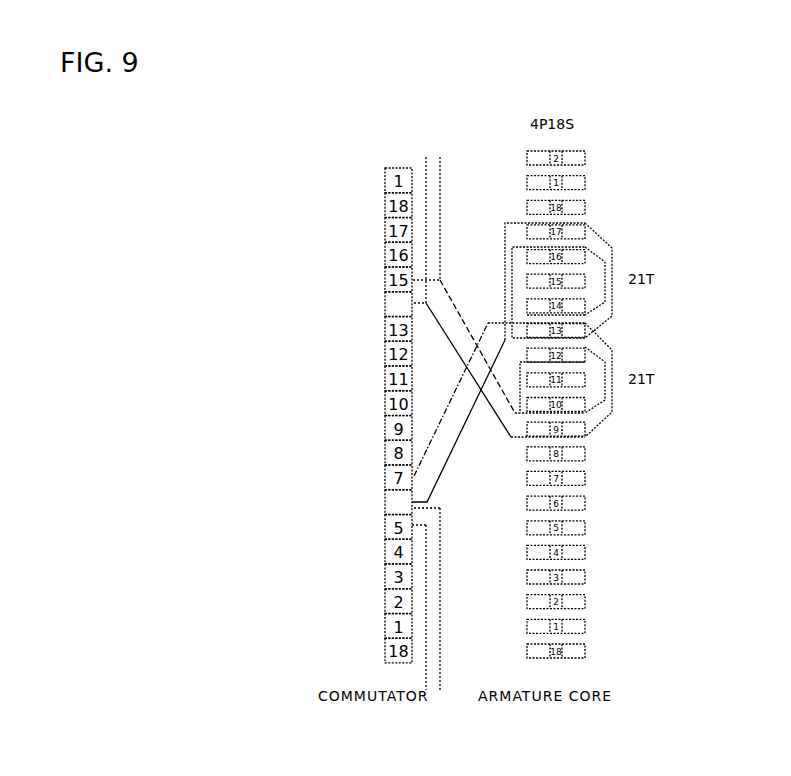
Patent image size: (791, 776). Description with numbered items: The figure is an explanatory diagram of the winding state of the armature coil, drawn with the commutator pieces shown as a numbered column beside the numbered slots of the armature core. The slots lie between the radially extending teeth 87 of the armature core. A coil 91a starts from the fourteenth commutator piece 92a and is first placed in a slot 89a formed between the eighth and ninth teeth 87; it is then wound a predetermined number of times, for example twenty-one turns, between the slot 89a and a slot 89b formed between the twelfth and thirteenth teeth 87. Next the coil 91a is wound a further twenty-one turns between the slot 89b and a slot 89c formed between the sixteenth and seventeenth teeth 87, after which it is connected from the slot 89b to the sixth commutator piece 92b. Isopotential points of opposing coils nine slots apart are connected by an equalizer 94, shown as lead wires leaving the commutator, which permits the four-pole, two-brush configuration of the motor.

The teeth 87 is at (588, 228).
The slot 89a is at (583, 444).
The slot 89b is at (610, 343).
The slot 89c is at (600, 246).
The coil 91a is at (448, 296).
The fourteenth commutator piece 92a is at (384, 301).
The sixth commutator piece 92b is at (384, 510).
The equalizer 94 is at (446, 184).